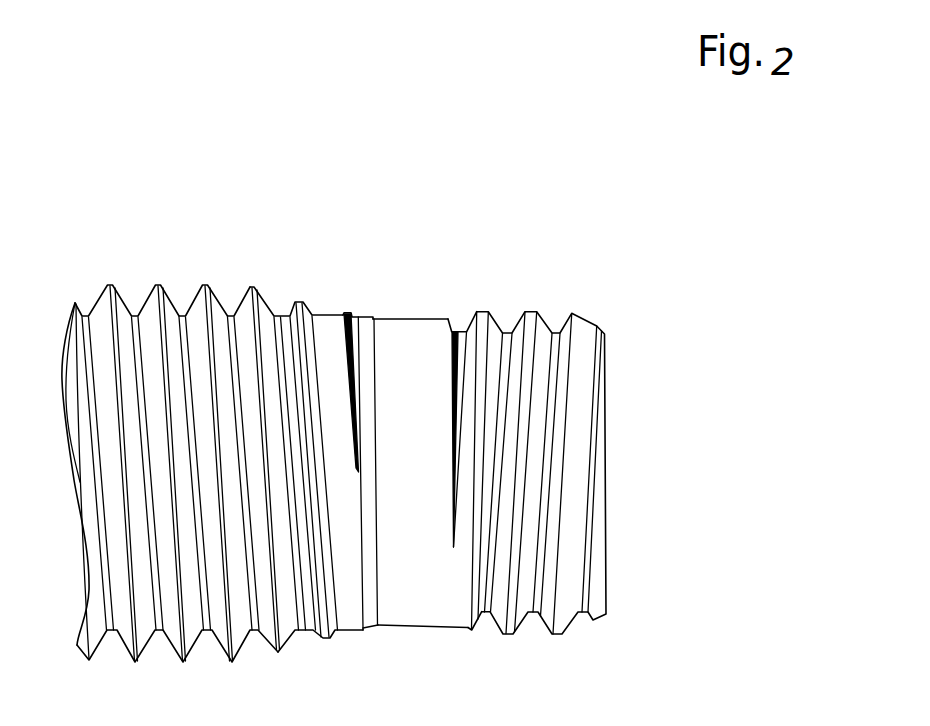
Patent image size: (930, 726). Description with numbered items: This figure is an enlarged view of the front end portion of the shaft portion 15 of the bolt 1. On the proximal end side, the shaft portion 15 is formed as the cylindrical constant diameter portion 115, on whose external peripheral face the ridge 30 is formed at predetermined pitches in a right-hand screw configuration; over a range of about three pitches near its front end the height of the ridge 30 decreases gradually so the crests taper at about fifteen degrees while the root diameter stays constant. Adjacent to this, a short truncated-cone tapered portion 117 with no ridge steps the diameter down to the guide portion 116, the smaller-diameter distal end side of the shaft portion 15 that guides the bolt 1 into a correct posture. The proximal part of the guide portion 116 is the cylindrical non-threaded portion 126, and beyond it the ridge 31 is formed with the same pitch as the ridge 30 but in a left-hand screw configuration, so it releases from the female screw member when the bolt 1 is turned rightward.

The bolt 1 is at (322, 210).
The shaft portion 15 is at (150, 272).
The constant diameter portion 115 is at (193, 295).
The ridge 30 is at (252, 287).
The tapered portion 117 is at (371, 317).
The non-threaded portion 126 is at (407, 613).
The guide portion 116 is at (452, 320).
The ridge 31 is at (480, 312).